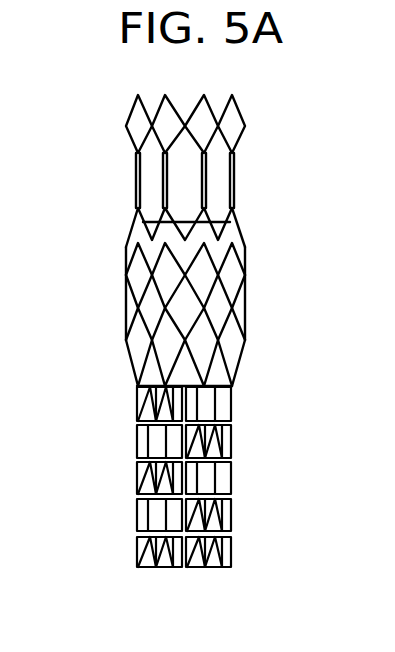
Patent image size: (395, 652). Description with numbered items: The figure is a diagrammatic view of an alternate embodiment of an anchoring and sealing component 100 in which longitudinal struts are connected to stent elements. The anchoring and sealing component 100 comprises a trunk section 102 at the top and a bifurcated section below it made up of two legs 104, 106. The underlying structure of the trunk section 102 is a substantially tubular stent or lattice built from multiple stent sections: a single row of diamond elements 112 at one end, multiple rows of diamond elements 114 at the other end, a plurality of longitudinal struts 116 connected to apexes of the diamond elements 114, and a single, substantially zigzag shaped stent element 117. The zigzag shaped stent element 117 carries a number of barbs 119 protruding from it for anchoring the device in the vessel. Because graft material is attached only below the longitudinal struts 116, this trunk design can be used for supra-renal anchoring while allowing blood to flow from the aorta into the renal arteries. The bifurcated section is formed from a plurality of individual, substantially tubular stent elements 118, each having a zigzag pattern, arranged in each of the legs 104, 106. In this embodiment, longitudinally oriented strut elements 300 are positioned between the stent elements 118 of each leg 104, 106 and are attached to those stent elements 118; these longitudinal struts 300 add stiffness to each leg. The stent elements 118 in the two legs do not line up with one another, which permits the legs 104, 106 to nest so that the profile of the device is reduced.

The anchoring and sealing component 100 is at (347, 113).
The trunk section 102 is at (280, 373).
The diamond elements 112 is at (128, 113).
The diamond elements 114 is at (128, 298).
The longitudinal struts 116 is at (134, 176).
The zigzag shaped stent element 117 is at (131, 222).
The barbs 119 is at (236, 229).
The stent elements 118 is at (140, 403).
The longitudinally oriented strut elements 300 is at (139, 438).
The leg 104 is at (162, 568).
The leg 106 is at (208, 568).